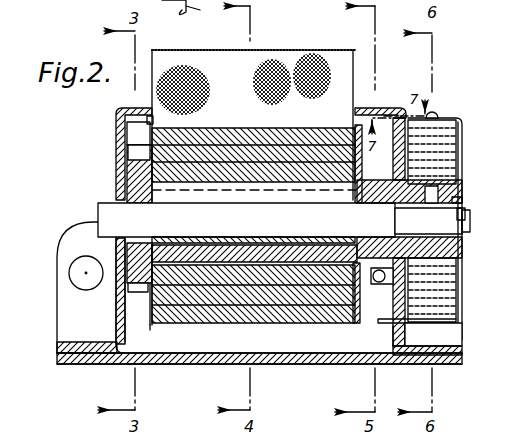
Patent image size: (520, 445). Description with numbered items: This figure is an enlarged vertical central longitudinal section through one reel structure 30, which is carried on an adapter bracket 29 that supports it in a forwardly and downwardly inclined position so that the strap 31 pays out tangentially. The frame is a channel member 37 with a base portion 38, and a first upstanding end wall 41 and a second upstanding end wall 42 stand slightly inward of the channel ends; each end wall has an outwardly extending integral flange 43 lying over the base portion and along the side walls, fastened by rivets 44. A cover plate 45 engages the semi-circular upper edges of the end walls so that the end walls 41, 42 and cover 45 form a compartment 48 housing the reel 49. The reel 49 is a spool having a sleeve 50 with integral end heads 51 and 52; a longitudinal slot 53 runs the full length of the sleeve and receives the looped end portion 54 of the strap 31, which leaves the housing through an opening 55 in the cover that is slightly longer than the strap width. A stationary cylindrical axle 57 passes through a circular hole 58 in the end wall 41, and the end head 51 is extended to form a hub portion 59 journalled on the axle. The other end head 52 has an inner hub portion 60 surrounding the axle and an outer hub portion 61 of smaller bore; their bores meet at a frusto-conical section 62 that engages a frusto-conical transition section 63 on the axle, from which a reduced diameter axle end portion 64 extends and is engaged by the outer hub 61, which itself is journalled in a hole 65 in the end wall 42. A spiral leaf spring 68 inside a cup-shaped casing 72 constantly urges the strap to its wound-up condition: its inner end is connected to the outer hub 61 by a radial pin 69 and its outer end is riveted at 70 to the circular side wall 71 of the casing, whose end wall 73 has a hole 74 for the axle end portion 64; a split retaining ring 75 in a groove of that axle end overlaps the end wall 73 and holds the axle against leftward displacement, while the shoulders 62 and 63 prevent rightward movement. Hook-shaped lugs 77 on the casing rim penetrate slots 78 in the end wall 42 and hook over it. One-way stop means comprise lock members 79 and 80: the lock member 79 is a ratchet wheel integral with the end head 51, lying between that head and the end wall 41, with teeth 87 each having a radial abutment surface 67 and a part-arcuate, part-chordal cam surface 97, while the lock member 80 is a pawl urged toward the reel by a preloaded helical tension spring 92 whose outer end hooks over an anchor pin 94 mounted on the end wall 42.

The adapter bracket 29 is at (188, 11).
The strap 31 is at (289, 52).
The reel structure 30 is at (112, 133).
The channel member 37 is at (66, 234).
The base portion 38 is at (300, 359).
The first upstanding end wall 41 is at (118, 112).
The second upstanding end wall 42 is at (405, 333).
The flange 43 is at (92, 346).
The rivet 44 is at (69, 272).
The cover plate 45 is at (385, 108).
The compartment 48 is at (215, 352).
The reel 49 is at (151, 326).
The sleeve 50 is at (296, 262).
The end head 51 is at (154, 120).
The end head 52 is at (355, 125).
The longitudinal slot 53 is at (165, 198).
The looped end portion 54 is at (254, 242).
The opening 55 is at (357, 110).
The axle 57 is at (100, 203).
The circular hole 58 is at (126, 246).
The hub portion 59 is at (143, 197).
The inner hub portion 60 is at (370, 203).
The outer hub portion 61 is at (460, 249).
The frusto-conical section 62 is at (428, 222).
The frusto-conical transition section 63 is at (395, 232).
The reduced diameter axle end portion 64 is at (472, 225).
The hole 65 is at (395, 184).
The radial abutment surface 67 is at (130, 290).
The spiral leaf spring 68 is at (465, 160).
The radial pin 69 is at (433, 203).
The rivet 70 is at (440, 116).
The circular side wall 71 is at (458, 120).
The cup-shaped casing 72 is at (468, 300).
The end wall 73 is at (465, 182).
The hole 74 is at (468, 212).
The split retaining ring 75 is at (464, 197).
The hook-shaped lug 77 is at (392, 327).
The slot 78 is at (395, 320).
The lock member 79 is at (148, 297).
The lock member 80 is at (355, 189).
The tooth 87 is at (128, 152).
The helical tension spring 92 is at (378, 284).
The anchor pin 94 is at (388, 297).
The cam surface 97 is at (137, 149).